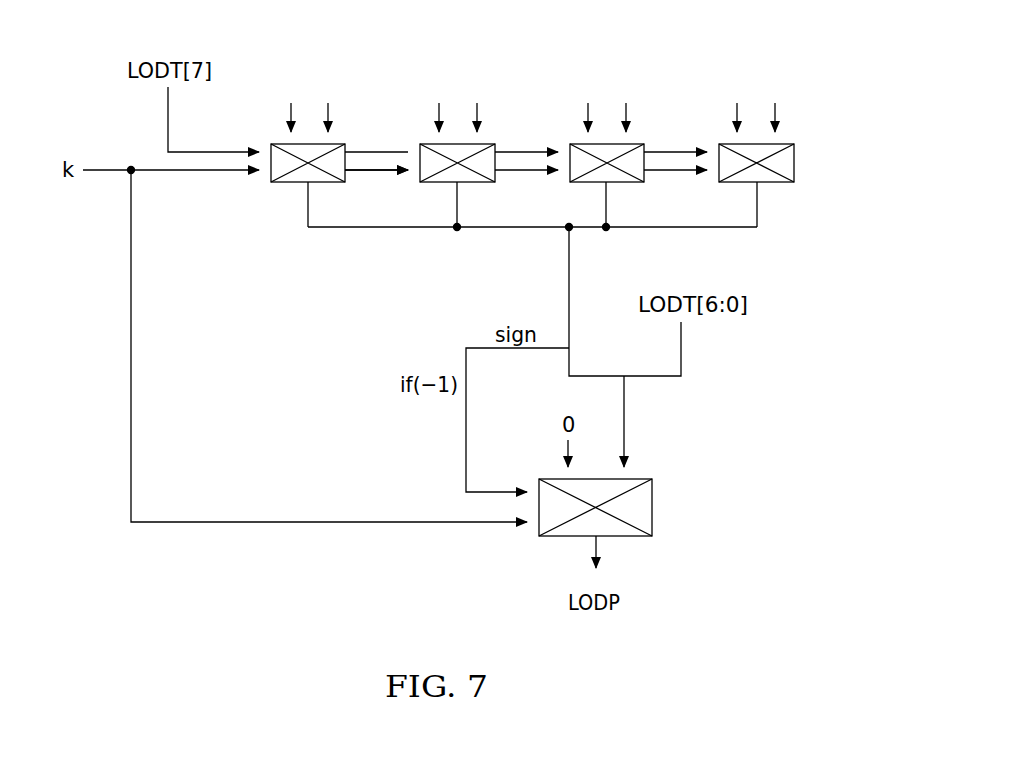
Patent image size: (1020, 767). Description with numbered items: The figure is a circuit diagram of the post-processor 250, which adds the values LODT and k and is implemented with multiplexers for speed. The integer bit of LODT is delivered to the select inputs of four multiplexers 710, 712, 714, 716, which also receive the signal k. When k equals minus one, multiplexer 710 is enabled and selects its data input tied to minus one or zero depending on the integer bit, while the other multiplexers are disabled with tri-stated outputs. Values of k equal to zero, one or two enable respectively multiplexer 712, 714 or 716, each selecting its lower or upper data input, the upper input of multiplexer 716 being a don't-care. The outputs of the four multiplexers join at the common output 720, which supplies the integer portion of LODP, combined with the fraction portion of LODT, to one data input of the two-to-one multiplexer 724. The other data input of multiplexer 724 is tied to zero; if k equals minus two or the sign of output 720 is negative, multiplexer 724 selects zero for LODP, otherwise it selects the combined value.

The multiplexer 710 is at (356, 118).
The multiplexer 712 is at (504, 118).
The multiplexer 714 is at (654, 118).
The multiplexer 716 is at (804, 118).
The output 720 is at (569, 272).
The 2-to-1 multiplexer 724 is at (677, 494).
The post-processor 250 is at (362, 555).